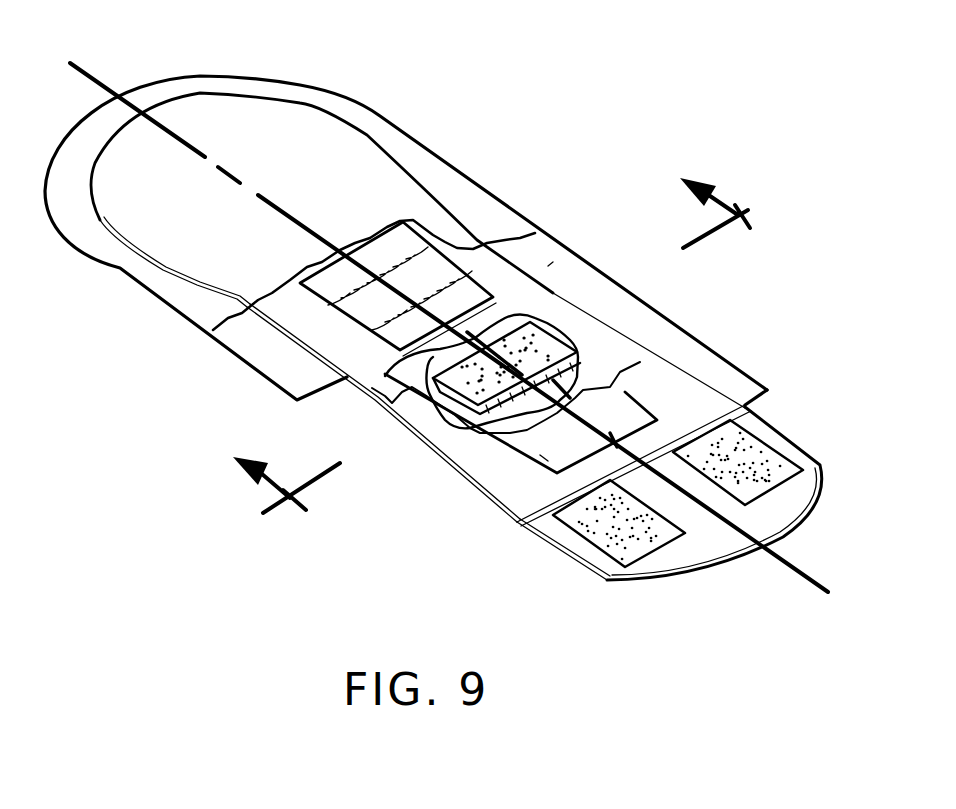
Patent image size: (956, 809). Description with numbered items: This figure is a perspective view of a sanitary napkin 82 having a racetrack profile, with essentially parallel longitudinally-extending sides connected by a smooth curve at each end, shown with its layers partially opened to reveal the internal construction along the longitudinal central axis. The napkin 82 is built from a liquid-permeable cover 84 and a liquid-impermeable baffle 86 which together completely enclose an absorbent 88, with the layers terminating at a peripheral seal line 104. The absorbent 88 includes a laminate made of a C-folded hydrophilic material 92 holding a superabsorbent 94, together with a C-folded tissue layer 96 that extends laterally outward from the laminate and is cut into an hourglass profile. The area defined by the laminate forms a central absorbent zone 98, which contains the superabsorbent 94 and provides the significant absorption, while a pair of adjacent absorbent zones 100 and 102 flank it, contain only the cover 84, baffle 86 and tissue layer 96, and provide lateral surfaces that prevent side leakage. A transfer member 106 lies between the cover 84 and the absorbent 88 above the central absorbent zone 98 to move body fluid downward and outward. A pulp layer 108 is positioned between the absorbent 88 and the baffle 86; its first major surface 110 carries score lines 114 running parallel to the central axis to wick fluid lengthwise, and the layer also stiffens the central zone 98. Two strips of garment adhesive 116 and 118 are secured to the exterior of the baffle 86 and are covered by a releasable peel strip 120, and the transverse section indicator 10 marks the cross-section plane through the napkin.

The sanitary napkin 82 is at (441, 78).
The liquid-permeable cover 84 is at (177, 213).
The liquid-impermeable baffle 86 is at (677, 383).
The absorbent 88 is at (522, 264).
The hydrophilic material 92 is at (458, 392).
The superabsorbent 94 is at (378, 396).
The tissue layer 96 is at (553, 262).
The central absorbent zone 98 is at (585, 425).
The adjacent absorbent zone 100 is at (420, 388).
The adjacent absorbent zone 102 is at (572, 312).
The peripheral seal line 104 is at (243, 108).
The transfer member 106 is at (430, 262).
The pulp layer 108 is at (742, 410).
The first major surface 110 is at (587, 473).
The score lines 114 is at (547, 450).
The garment adhesive strip 116 is at (633, 547).
The garment adhesive strip 118 is at (770, 460).
The releasable peel strip 120 is at (720, 537).
The section line 10- 10 is at (511, 362).